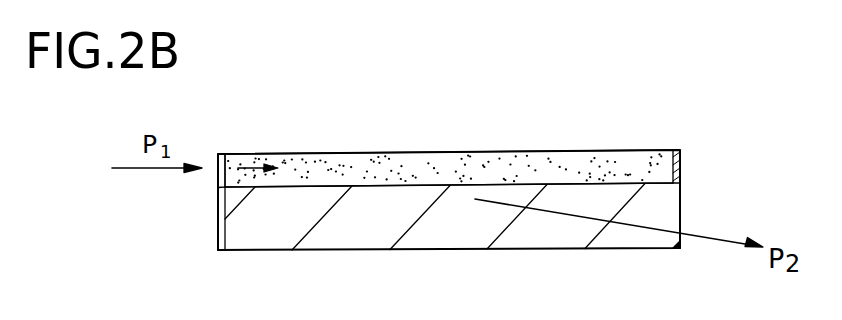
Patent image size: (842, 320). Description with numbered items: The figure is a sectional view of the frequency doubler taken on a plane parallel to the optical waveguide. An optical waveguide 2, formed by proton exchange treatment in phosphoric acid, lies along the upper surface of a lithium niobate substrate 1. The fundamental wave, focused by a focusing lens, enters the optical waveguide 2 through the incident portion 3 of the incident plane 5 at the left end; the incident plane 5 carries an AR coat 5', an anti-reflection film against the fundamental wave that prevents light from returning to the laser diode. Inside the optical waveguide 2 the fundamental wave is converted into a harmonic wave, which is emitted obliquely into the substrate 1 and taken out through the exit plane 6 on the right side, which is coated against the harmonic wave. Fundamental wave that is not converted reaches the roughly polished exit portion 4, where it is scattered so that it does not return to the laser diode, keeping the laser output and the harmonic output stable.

The LiNbO3 substrate 1 is at (483, 238).
The optical waveguide 2 is at (390, 167).
The incident portion 3 is at (219, 153).
The exit portion 4 is at (680, 162).
The incident plane 5 is at (197, 219).
The AR coat 5' is at (202, 233).
The exit plane 6 is at (680, 207).